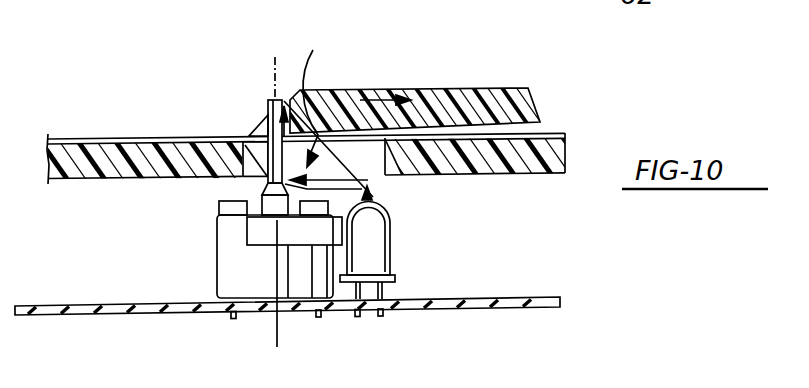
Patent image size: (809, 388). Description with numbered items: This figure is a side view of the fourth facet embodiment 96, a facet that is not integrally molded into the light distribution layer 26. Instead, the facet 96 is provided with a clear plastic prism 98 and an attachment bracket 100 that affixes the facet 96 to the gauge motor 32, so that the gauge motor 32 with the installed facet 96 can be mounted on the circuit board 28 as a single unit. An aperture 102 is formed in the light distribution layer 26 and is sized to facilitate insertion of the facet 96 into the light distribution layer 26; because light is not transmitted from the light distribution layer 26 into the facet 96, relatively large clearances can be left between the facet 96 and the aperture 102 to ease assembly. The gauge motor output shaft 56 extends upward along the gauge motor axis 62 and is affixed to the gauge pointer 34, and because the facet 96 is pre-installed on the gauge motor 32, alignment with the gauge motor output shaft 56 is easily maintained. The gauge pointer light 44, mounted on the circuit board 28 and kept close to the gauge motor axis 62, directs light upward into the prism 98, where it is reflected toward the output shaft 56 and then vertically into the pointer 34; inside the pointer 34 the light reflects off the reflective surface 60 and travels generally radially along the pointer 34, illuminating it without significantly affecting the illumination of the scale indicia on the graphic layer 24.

The graphic layer 24 is at (547, 134).
The light distribution layer 26 is at (527, 174).
The circuit board 28 is at (475, 308).
The gauge motor 32 is at (218, 275).
The gauge pointer 34 is at (507, 88).
The gauge pointer light 44 is at (392, 234).
The gauge motor output shaft 56 is at (268, 118).
The reflective surface 60 is at (258, 126).
The gauge motor axis 62 is at (277, 330).
The fourth facet embodiment 96 is at (653, 387).
The clear plastic prism 98 is at (347, 158).
The attachment bracket 100 is at (246, 242).
The aperture 102 is at (387, 140).